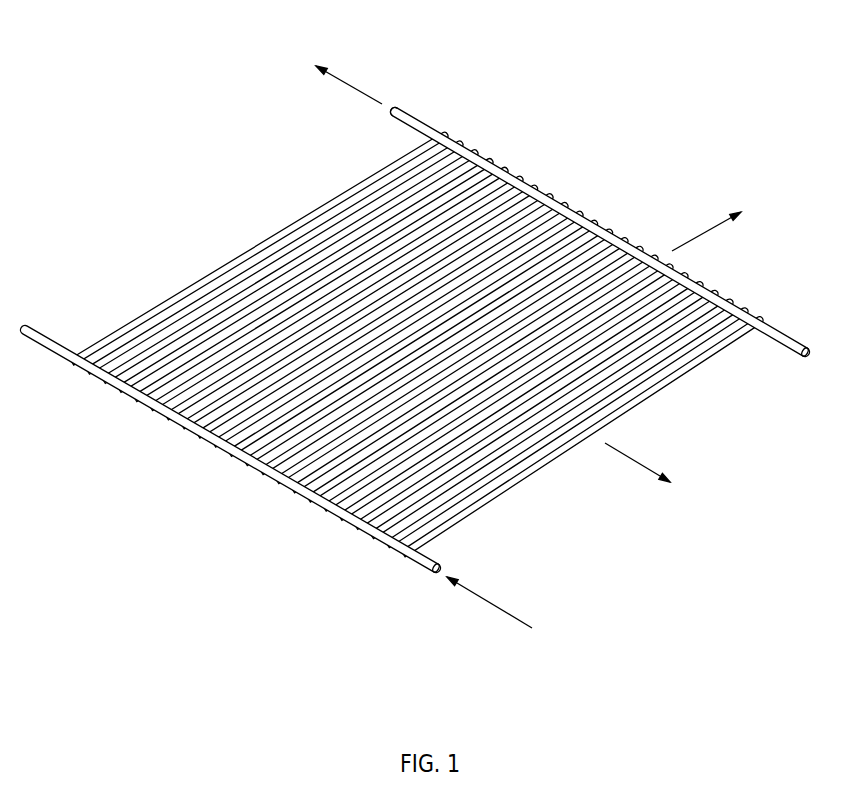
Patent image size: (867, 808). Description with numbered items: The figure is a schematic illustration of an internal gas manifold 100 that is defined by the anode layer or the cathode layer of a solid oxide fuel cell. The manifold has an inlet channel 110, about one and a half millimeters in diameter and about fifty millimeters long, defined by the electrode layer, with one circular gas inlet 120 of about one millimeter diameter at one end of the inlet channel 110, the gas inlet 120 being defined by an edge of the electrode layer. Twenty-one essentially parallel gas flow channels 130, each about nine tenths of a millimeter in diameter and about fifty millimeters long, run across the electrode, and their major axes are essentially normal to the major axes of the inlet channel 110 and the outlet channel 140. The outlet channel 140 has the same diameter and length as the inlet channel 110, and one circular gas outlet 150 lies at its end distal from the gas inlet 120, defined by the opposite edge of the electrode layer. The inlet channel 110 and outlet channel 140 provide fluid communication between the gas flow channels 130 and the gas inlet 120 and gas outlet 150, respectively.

The gas manifold 100 is at (417, 341).
The inlet channel 110 is at (200, 438).
The gas inlet 120 is at (410, 565).
The gas flow channels 130 is at (618, 388).
The outlet channel 140 is at (540, 190).
The gas outlet 150 is at (397, 122).